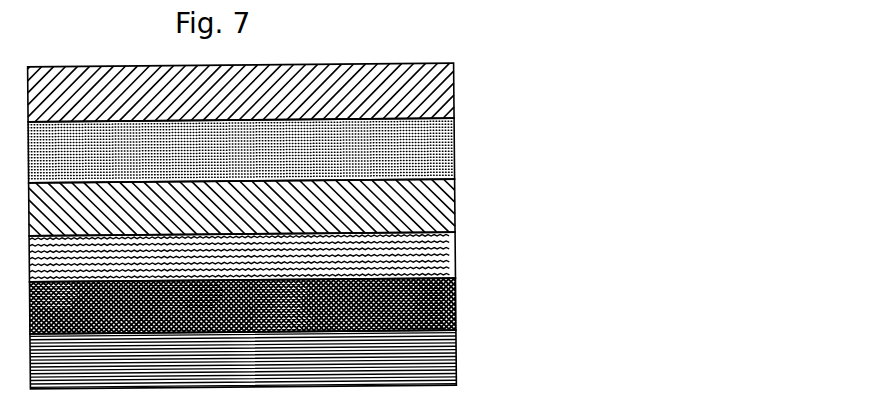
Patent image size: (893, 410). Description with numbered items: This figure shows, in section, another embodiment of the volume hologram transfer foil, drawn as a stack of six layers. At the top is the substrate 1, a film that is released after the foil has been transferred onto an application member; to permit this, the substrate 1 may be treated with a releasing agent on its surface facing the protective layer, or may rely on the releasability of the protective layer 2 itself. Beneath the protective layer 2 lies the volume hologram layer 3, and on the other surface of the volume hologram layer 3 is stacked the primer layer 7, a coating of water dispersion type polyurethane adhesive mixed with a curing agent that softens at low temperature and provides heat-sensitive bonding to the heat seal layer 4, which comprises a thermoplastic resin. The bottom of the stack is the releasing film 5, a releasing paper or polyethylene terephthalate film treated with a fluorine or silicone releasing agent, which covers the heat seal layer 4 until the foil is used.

The substrate 1 is at (455, 102).
The protective layer 2 is at (455, 158).
The volume hologram layer 3 is at (455, 215).
The primer layer 7 is at (455, 265).
The heat seal layer 4 is at (455, 316).
The releasing film 5 is at (455, 367).